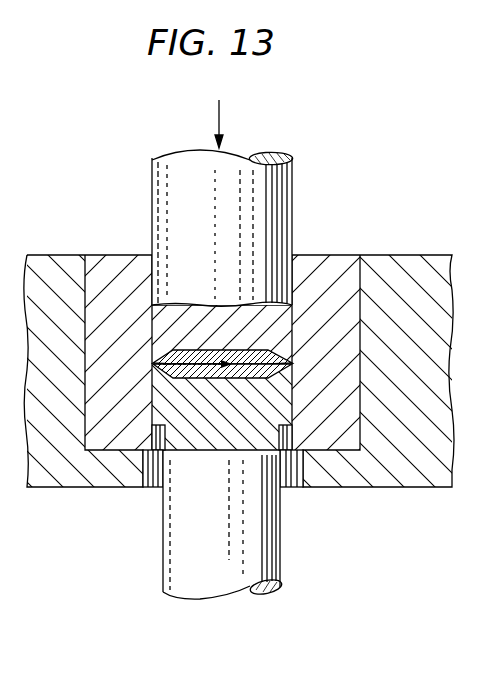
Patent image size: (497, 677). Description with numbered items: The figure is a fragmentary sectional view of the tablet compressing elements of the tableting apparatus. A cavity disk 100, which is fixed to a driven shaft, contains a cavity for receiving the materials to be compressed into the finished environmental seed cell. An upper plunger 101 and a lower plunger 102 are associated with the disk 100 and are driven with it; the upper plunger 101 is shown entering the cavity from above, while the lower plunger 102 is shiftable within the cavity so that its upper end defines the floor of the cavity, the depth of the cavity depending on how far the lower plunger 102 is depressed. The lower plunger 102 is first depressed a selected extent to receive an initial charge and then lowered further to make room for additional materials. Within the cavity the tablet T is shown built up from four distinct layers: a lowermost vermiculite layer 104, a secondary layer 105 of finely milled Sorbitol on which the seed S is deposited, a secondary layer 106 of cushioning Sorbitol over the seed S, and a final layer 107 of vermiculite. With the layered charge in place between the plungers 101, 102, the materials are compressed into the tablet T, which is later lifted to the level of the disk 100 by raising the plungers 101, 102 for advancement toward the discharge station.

The cavity disk 100 is at (410, 256).
The upper plunger 101 is at (152, 160).
The lower plunger 102 is at (208, 587).
The lowermost vermiculite layer 104 is at (210, 377).
The secondary layer 105 is at (153, 370).
The secondary layer of cushioning Sorbitol 106 is at (153, 363).
The final layer 107 is at (250, 351).
The tablet T is at (190, 330).
The seed S is at (234, 380).